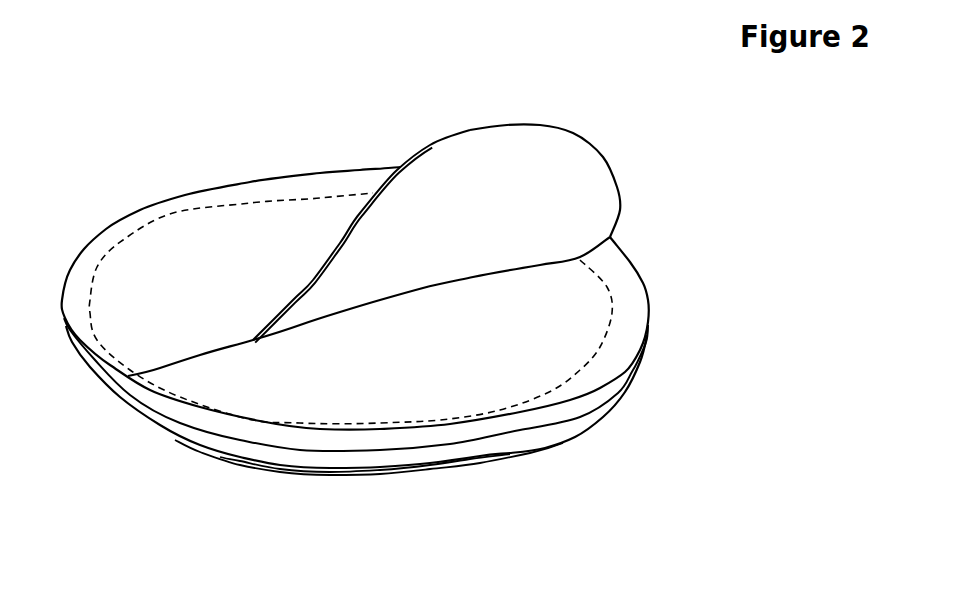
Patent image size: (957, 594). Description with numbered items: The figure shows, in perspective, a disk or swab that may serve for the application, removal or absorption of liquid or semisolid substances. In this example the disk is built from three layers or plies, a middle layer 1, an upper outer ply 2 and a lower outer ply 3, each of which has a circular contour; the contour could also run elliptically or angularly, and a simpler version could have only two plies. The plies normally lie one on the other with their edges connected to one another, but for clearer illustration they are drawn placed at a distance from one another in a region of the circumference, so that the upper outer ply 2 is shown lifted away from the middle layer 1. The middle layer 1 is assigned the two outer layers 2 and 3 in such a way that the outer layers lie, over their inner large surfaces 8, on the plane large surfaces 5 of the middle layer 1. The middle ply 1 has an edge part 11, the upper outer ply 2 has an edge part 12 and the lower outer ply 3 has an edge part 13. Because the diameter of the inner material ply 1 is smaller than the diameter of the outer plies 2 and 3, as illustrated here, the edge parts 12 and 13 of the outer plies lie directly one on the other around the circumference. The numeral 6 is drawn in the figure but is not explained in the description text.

The middle layer 1 is at (648, 283).
The upper outer ply 2 is at (423, 201).
The lower outer ply 3 is at (183, 433).
The plane large surfaces 5 is at (350, 308).
The cushioning layer 6 is at (440, 528).
The inner large surfaces 8 is at (541, 177).
The edge part 11 is at (598, 383).
The edge part 12 is at (470, 128).
The edge part 13 is at (257, 462).